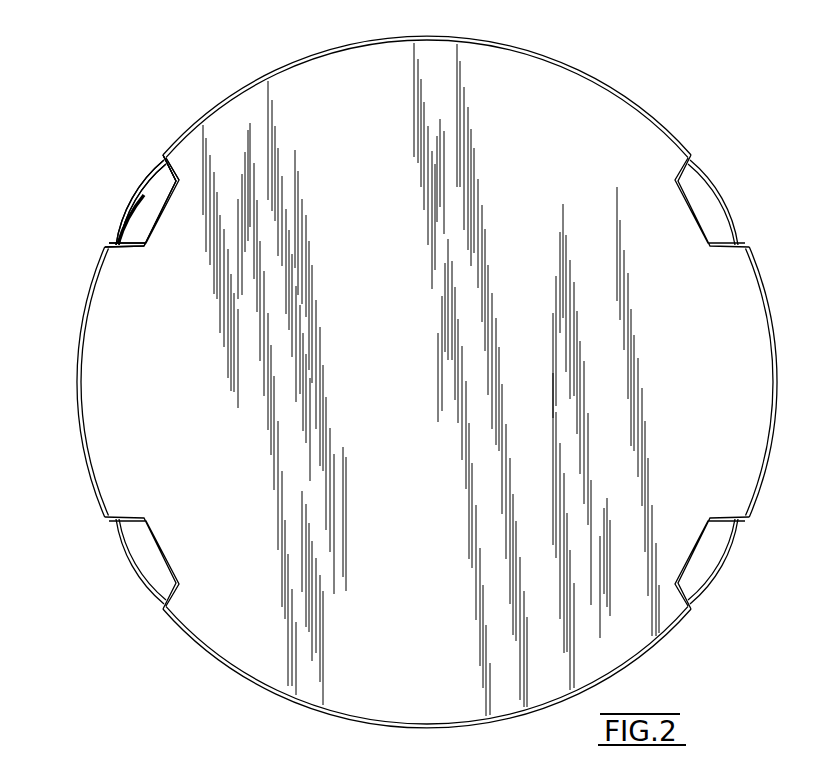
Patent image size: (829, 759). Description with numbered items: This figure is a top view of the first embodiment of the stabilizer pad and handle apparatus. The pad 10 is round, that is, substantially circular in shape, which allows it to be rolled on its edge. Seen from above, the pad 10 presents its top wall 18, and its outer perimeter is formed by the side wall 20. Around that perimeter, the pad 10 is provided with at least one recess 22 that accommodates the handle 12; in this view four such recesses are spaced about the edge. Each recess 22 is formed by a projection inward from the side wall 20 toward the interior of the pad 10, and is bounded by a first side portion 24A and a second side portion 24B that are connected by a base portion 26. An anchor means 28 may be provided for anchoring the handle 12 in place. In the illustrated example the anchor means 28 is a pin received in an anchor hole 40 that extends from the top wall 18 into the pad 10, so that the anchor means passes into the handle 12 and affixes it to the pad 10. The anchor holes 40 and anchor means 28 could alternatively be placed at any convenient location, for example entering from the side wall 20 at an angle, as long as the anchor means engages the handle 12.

The pad 10 is at (277, 61).
The handle 12 is at (150, 175).
The top wall 18 is at (282, 122).
The side wall 20 is at (608, 80).
The recess 22 is at (150, 207).
The first side portion 24A is at (172, 208).
The second side portion 24B is at (140, 236).
The base portion 26 is at (168, 192).
The anchor means 28 is at (174, 165).
The anchor hole 40 is at (112, 245).